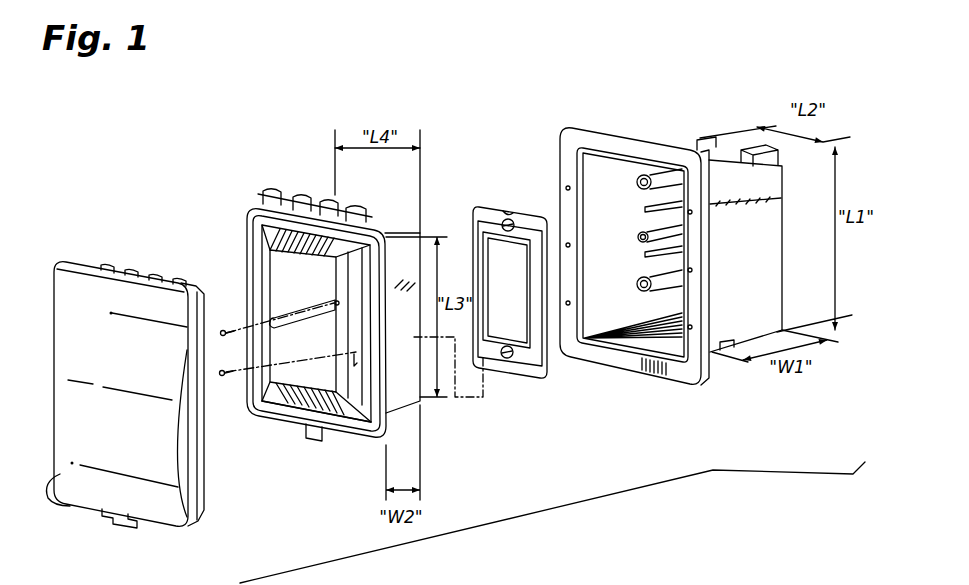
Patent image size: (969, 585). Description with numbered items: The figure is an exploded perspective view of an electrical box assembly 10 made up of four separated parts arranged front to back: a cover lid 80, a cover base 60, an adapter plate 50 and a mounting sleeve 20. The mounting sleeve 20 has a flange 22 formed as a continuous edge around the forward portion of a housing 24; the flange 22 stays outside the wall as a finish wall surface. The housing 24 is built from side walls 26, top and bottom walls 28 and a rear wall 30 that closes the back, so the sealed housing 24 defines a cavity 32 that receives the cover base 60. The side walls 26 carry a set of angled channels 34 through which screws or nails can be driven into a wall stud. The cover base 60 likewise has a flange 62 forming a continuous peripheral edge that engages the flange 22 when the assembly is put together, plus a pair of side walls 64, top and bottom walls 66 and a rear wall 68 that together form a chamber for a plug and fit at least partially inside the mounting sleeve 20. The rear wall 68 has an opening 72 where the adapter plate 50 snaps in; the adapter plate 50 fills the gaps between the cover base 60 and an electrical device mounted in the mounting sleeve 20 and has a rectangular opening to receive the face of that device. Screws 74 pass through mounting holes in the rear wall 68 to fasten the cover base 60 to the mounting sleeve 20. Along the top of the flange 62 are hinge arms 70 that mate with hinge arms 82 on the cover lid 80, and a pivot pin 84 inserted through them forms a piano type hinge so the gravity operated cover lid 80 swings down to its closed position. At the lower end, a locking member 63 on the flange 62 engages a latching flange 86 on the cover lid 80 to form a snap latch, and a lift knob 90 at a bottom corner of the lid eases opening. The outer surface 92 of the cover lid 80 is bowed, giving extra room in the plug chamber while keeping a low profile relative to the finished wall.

The electrical box assembly 10 is at (177, 158).
The mounting sleeve 20 is at (552, 120).
The flange 22 is at (616, 130).
The housing 24 is at (785, 272).
The side walls 26 is at (600, 264).
The top and bottom walls 28 is at (699, 136).
The rear wall 30 is at (783, 190).
The cavity 32 is at (597, 228).
The angled channels 34 is at (636, 184).
The adapter plate 50 is at (475, 201).
The cover base 60 is at (234, 226).
The flange 62 is at (262, 426).
The locking member 63 is at (312, 446).
The side walls 64 is at (294, 386).
The top and bottom walls 66 is at (385, 228).
The rear wall 68 is at (334, 330).
The hinge arms 70 is at (296, 194).
The opening 72 is at (294, 284).
The screws 74 is at (224, 330).
The cover lid 80 is at (56, 243).
The hinge arms 82 is at (106, 264).
The pivot pin 84 is at (266, 190).
The latching flange 86 is at (126, 529).
The lift knob 90 is at (60, 508).
The outer surface 92 is at (97, 421).